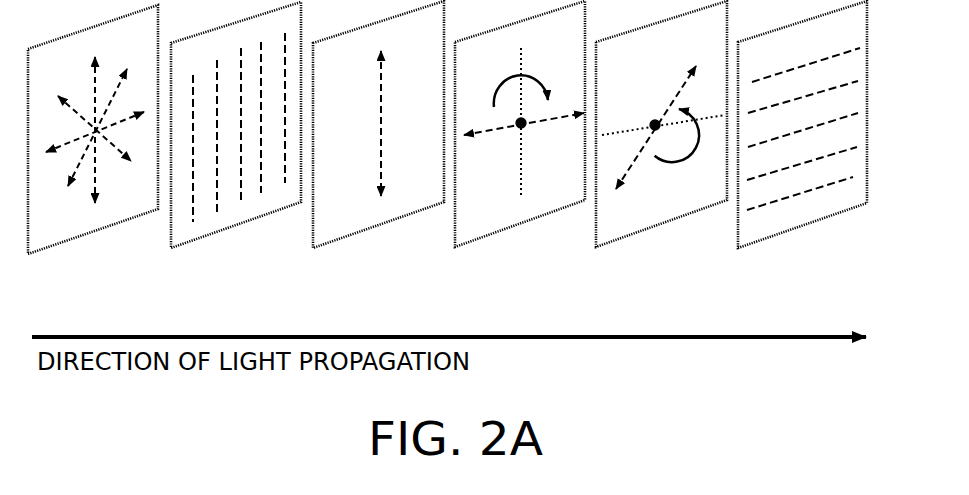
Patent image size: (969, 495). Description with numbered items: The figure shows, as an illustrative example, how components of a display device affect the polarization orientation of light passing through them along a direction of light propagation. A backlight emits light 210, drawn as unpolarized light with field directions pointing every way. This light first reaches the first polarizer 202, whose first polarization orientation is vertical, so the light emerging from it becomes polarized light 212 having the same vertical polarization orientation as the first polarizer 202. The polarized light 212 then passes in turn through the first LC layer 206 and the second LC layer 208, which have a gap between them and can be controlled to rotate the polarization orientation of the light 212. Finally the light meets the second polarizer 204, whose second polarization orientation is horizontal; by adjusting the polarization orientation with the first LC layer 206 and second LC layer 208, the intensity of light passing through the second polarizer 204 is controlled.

The light 210 is at (43, 278).
The first polarizer 202 is at (184, 278).
The polarized light 212 is at (325, 278).
The first LC layer 206 is at (470, 278).
The second LC layer 208 is at (606, 278).
The second polarizer 204 is at (739, 278).